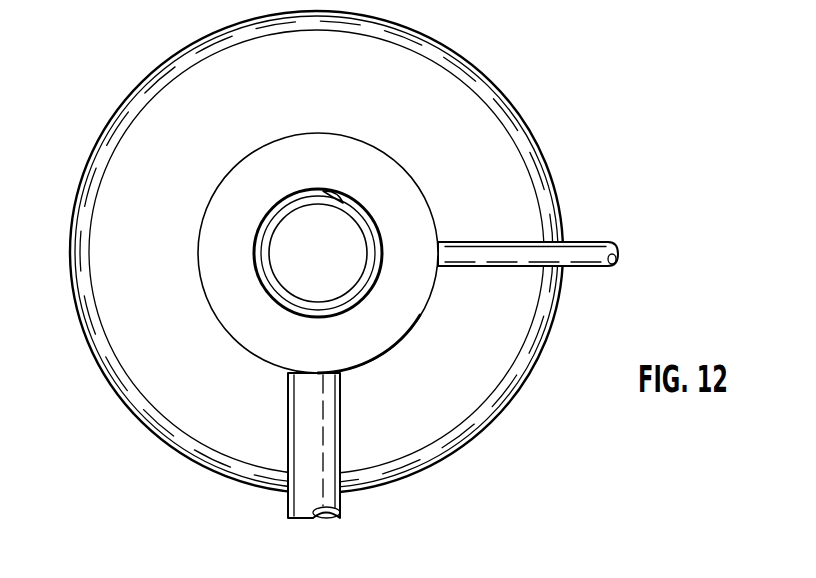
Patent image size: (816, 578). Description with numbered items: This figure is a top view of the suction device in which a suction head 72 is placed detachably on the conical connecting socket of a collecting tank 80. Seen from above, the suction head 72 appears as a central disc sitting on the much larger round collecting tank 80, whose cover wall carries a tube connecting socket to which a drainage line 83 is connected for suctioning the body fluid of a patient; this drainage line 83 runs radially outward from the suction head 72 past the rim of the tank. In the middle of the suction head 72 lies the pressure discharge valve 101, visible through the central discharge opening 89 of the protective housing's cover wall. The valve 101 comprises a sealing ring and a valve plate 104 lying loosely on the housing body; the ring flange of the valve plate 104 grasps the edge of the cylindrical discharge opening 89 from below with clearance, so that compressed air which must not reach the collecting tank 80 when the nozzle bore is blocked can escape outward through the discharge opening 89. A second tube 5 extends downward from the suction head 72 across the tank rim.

The collecting tank 80 is at (172, 102).
The suction head 72 is at (366, 163).
The central discharge opening 89 is at (324, 192).
The pressure discharge valve 101 is at (248, 226).
The valve plate 104 is at (350, 272).
The drainage line 83 is at (585, 255).
The lower tube 5 is at (296, 430).